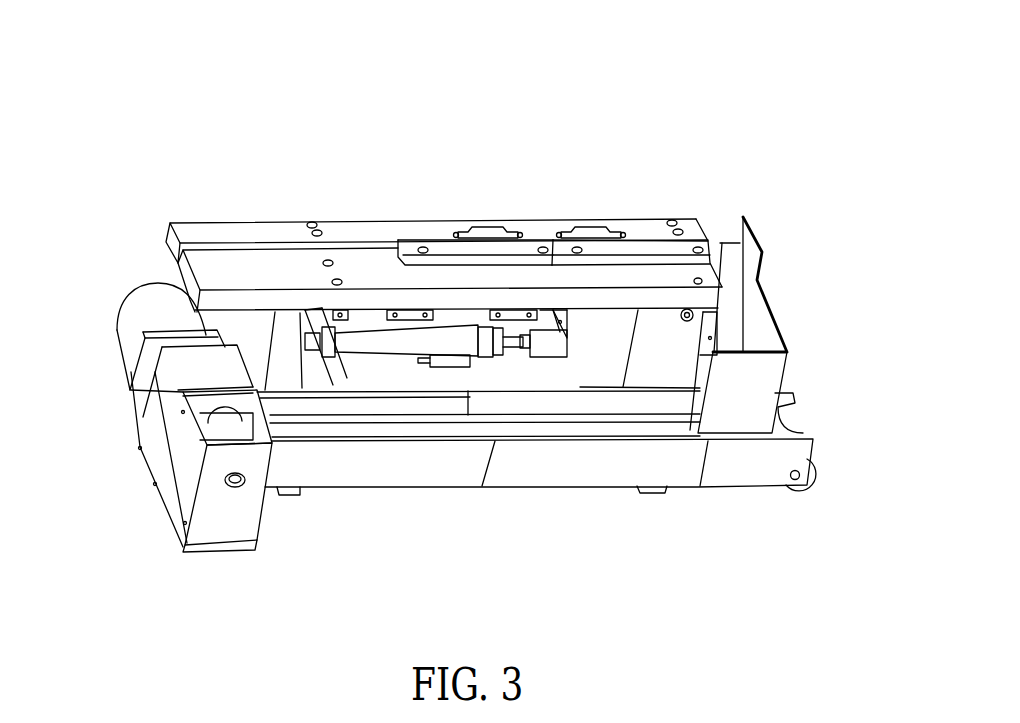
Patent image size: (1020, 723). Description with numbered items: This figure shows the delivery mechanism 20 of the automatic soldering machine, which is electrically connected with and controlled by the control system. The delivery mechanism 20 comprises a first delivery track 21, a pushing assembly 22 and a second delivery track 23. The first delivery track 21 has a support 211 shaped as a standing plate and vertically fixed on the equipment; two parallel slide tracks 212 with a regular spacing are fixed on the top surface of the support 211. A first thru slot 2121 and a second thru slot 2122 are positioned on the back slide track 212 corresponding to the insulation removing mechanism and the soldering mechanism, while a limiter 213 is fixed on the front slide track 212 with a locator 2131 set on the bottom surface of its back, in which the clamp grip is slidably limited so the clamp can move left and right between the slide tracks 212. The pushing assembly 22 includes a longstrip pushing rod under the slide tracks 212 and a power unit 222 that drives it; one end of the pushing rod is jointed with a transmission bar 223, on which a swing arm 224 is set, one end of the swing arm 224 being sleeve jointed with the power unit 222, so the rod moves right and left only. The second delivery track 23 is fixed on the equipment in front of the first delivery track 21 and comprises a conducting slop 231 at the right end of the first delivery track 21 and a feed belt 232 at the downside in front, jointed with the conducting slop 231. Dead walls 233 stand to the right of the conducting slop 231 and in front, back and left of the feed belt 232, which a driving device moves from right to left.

The delivery mechanism 20 is at (102, 60).
The first delivery track 21 is at (290, 308).
The support 211 is at (287, 348).
The slide tracks 212 is at (173, 225).
The limiter 213 is at (646, 265).
The locator 2131 is at (392, 240).
The first thru slot 2121 is at (482, 228).
The second thru slot 2122 is at (583, 228).
The pushing assembly 22 is at (350, 318).
The power unit 222 is at (420, 343).
The transmission bar 223 is at (560, 340).
The swing arm 224 is at (533, 343).
The second delivery track 23 is at (707, 442).
The conducting slop 231 is at (730, 265).
The feed belt 232 is at (337, 420).
The dead walls 233 is at (193, 448).